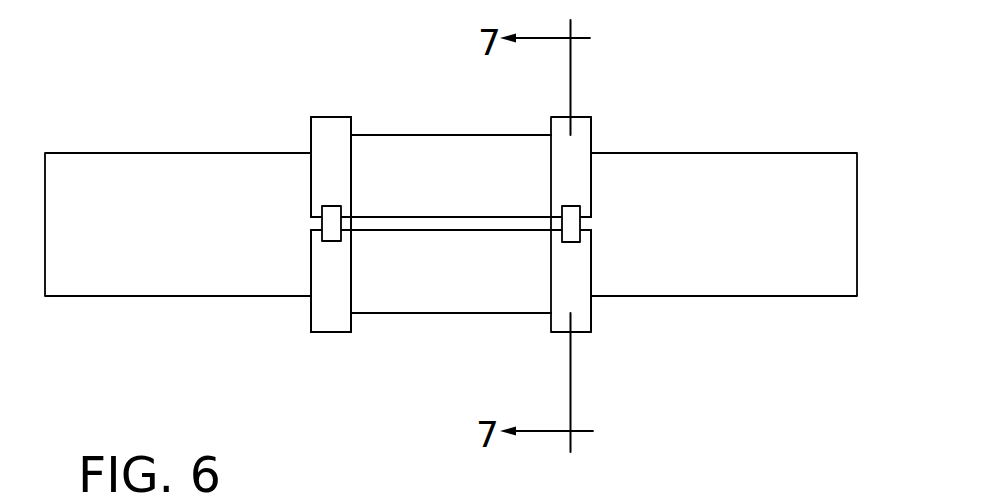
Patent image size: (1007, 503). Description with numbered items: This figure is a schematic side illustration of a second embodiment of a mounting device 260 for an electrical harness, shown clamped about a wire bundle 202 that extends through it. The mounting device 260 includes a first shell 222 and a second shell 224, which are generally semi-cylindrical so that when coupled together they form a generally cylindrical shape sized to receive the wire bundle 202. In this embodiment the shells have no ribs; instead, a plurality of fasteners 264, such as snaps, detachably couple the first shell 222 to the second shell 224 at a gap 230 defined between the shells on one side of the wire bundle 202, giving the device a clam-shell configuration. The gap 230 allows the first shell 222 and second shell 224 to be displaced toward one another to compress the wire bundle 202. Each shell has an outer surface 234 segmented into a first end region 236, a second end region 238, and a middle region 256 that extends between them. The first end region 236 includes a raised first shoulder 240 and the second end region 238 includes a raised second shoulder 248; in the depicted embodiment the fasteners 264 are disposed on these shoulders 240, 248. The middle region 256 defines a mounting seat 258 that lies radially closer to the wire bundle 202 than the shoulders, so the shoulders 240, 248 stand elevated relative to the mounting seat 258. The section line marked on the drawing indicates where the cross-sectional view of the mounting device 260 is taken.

The wire bundle 202 is at (750, 147).
The first shell 222 is at (427, 70).
The second shell 224 is at (418, 343).
The gap 230 is at (312, 222).
The outer surface 234 is at (482, 135).
The first end region 236 is at (308, 133).
The second end region 238 is at (613, 140).
The first shoulder 240 is at (320, 112).
The second shoulder 248 is at (582, 110).
The middle region 256 is at (408, 135).
The mounting seat 258 is at (453, 135).
The mounting device 260 is at (300, 43).
The fasteners 264 is at (327, 232).